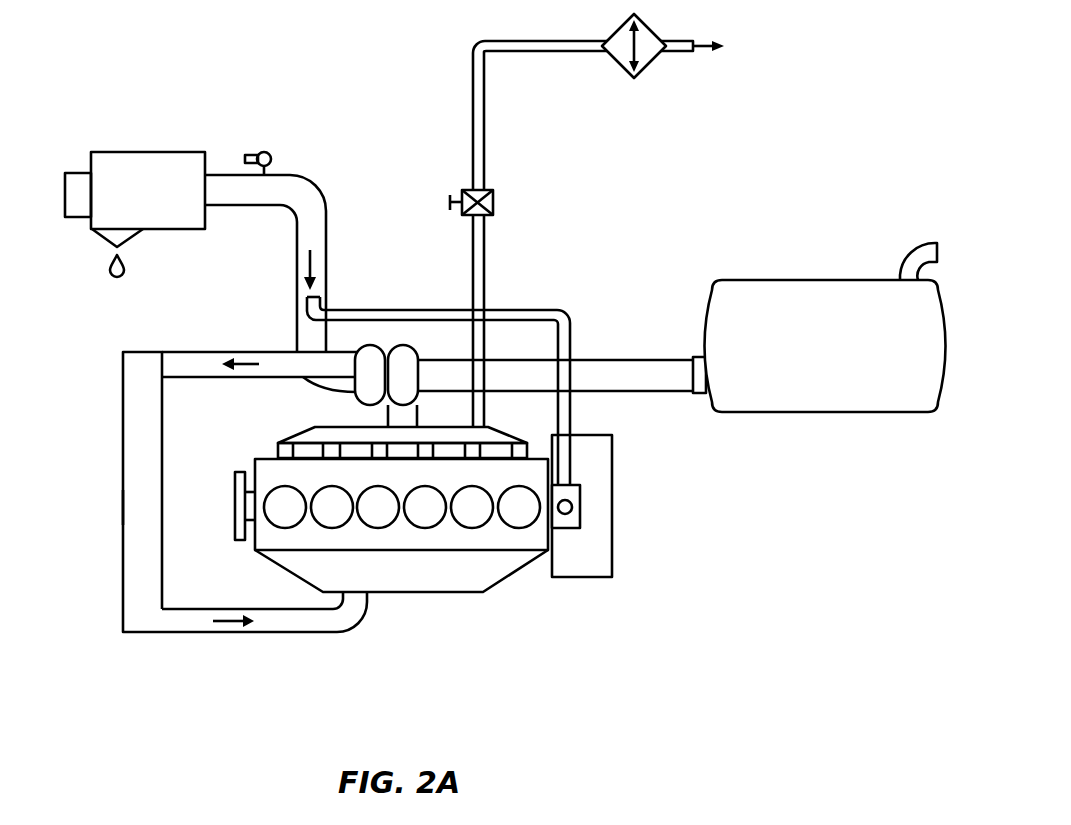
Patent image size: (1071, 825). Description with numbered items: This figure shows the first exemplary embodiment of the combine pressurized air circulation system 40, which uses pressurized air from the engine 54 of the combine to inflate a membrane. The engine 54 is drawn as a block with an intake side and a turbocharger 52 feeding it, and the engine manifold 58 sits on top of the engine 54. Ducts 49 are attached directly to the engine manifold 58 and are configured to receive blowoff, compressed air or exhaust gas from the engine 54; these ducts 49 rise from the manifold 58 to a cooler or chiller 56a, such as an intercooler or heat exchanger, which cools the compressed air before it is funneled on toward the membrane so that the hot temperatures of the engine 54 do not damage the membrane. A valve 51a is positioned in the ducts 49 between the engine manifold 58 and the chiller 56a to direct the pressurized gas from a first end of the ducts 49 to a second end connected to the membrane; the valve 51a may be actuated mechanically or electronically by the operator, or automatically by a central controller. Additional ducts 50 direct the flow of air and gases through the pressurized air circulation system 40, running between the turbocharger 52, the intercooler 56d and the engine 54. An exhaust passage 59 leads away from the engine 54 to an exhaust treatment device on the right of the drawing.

The combine pressurized air circulation system 40 is at (215, 95).
The ducts 49 is at (472, 128).
The additional ducts 50 is at (247, 377).
The valve 51a is at (496, 202).
The turbocharger 52 is at (103, 452).
The engine 54 is at (439, 593).
The cooler or chiller 56a is at (622, 67).
The intercooler 56d is at (122, 507).
The engine manifold 58 is at (348, 425).
The exhaust passage 59 is at (630, 392).